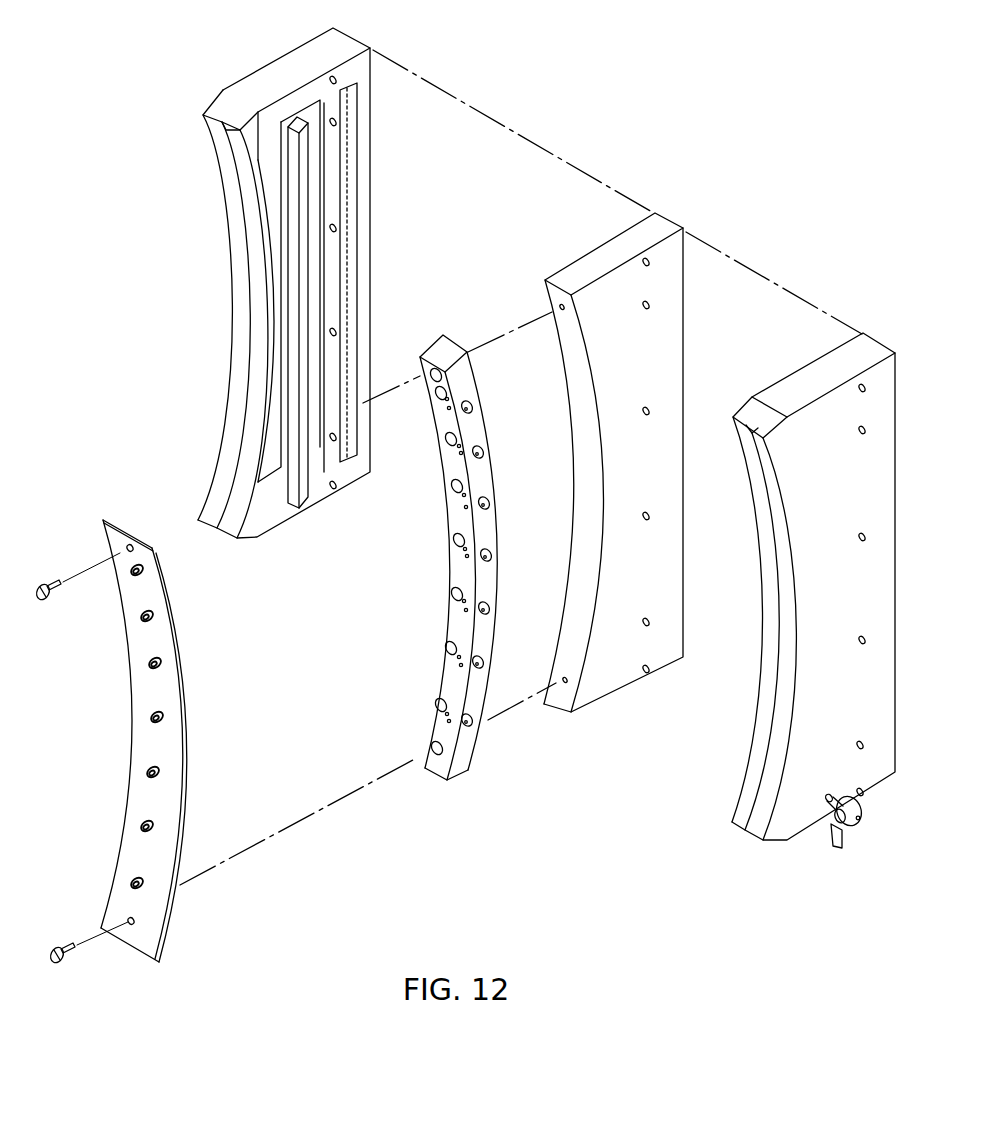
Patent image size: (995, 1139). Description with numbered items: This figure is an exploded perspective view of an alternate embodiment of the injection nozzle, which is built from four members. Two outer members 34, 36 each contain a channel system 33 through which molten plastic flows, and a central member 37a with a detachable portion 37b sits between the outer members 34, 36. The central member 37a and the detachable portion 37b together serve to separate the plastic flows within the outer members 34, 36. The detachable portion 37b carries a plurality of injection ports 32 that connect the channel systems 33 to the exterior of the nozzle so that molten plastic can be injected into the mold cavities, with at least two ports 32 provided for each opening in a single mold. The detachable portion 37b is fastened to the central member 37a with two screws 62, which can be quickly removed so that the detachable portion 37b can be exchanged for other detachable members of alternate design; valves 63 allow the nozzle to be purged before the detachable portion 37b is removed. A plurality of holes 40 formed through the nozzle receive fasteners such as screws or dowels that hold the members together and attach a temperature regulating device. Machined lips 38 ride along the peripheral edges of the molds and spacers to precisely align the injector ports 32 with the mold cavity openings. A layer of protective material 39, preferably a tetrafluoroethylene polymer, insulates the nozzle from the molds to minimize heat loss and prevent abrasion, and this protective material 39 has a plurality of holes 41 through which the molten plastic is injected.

The injection ports 32 is at (478, 453).
The channel system 33 is at (345, 149).
The outer member 34 is at (275, 80).
The outer member 36 is at (800, 397).
The central member 37a is at (592, 258).
The detachable portion 37b is at (442, 353).
The machined lips 38 is at (232, 214).
The protective material 39 is at (170, 690).
The holes 40 is at (336, 122).
The holes 41 is at (134, 572).
The screws 62 is at (53, 586).
The valves 63 is at (860, 822).